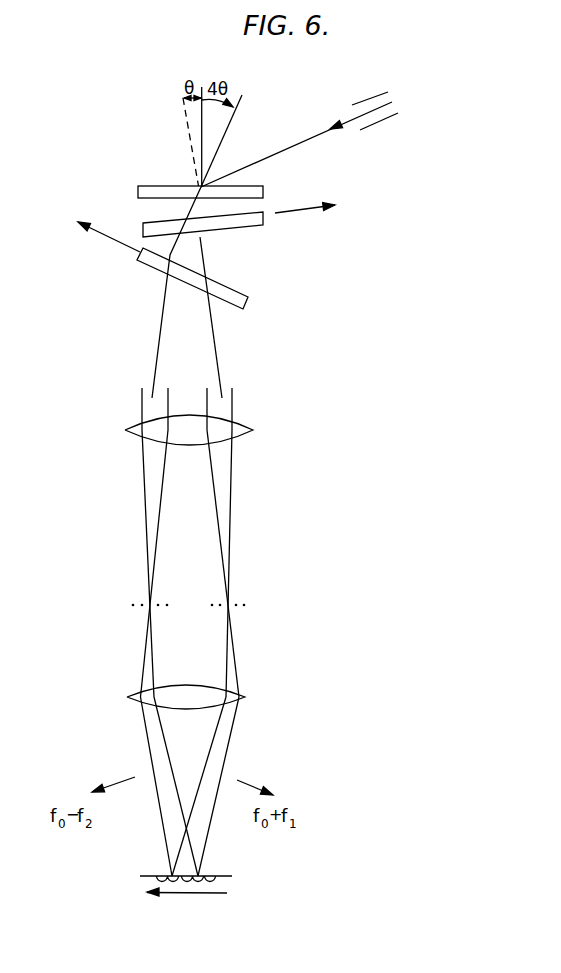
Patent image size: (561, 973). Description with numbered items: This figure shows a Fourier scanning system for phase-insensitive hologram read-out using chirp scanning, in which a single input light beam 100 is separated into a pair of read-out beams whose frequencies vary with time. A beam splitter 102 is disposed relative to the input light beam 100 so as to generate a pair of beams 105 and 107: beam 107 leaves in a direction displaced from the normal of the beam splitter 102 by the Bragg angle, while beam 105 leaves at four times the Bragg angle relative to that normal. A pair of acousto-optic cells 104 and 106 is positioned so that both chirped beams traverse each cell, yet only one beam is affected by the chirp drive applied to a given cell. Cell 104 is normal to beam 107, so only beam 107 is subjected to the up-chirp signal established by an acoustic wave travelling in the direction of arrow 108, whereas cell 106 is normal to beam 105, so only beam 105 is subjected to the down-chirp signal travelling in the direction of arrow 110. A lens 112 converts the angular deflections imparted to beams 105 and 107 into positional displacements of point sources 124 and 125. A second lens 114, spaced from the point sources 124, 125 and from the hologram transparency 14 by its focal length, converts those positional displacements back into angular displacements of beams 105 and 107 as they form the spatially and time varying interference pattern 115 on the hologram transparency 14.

The hologram transparency 14 is at (218, 888).
The input light beam 100 is at (377, 122).
The beam splitter 102 is at (157, 186).
The acousto-optic cell 104 is at (252, 226).
The beam 105 is at (185, 218).
The acousto-optic cell 106 is at (247, 296).
The beam 107 is at (204, 267).
The arrow 108 is at (305, 205).
The arrow 110 is at (110, 243).
The lens 112 is at (247, 428).
The lens 114 is at (240, 696).
The interference pattern 115 is at (187, 875).
The point source 124 is at (148, 603).
The point source 125 is at (228, 603).